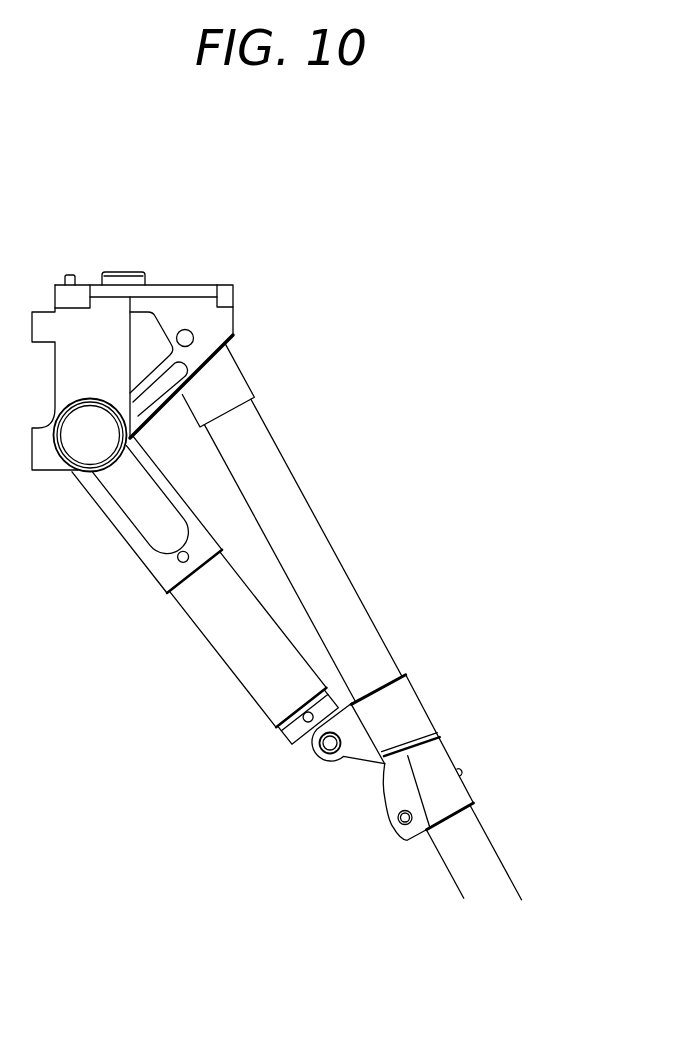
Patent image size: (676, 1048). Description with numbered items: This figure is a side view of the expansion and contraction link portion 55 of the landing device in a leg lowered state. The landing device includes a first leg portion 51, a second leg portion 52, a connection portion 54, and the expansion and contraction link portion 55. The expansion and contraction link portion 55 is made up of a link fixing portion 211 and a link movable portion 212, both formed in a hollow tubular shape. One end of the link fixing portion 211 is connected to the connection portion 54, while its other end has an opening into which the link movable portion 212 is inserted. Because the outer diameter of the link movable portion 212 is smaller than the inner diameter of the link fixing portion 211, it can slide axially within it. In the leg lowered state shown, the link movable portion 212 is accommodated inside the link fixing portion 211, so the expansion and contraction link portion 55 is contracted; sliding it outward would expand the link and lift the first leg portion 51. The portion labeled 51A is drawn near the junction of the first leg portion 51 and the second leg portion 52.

The connection portion 54 is at (173, 253).
The first leg portion 51 is at (313, 510).
The joint member 51A is at (468, 721).
The second leg portion 52 is at (502, 857).
The expansion and contraction link portion 55 is at (195, 603).
The link fixing portion 211 is at (190, 638).
The link movable portion 212 is at (274, 749).